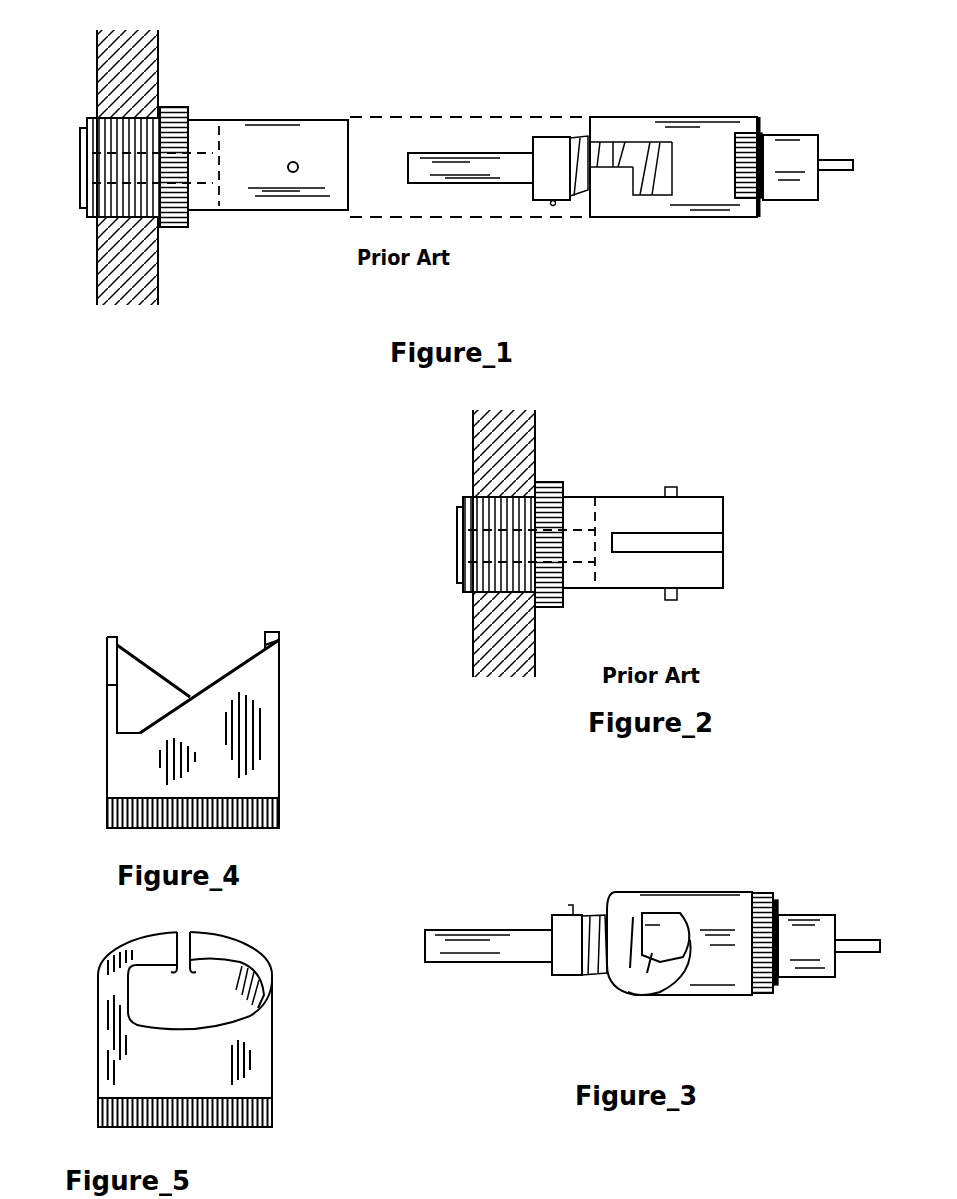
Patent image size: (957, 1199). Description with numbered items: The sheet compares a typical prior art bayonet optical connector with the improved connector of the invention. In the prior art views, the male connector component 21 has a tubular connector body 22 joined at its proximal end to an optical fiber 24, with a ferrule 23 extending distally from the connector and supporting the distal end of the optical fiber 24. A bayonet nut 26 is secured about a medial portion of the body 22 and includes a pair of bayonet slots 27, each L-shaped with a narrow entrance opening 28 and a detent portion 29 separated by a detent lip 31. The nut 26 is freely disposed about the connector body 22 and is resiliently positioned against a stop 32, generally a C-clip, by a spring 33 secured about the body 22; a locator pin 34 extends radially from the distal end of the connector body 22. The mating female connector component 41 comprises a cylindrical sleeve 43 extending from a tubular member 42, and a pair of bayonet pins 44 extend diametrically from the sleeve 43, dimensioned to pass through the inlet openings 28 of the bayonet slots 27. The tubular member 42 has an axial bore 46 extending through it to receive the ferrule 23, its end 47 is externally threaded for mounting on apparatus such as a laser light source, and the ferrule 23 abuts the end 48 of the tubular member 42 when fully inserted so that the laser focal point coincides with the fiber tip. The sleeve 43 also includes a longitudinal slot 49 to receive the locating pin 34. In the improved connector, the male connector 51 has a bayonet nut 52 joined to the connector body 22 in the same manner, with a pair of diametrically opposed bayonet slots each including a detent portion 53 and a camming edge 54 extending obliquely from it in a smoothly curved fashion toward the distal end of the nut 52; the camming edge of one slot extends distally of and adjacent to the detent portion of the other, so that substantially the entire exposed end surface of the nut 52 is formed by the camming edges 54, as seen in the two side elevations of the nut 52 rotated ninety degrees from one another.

In FIG. 1, the male connector component 21 is at (654, 185).
In FIG. 1, the tubular connector body 22 is at (580, 137).
In FIG. 3, the tubular connector body 22 is at (818, 913).
In FIG. 1, the ferrule 23 is at (445, 153).
In FIG. 3, the ferrule 23 is at (443, 930).
In FIG. 1, the optical fiber 24 is at (838, 167).
In FIG. 3, the optical fiber 24 is at (862, 953).
In FIG. 1, the bayonet nut 26 is at (677, 217).
In FIG. 1, the bayonet slot 27 is at (632, 196).
In FIG. 1, the entrance opening 28 is at (610, 157).
In FIG. 1, the detent portion 29 is at (653, 195).
In FIG. 1, the detent lip 31 is at (635, 166).
In FIG. 1, the stop 32 is at (763, 210).
In FIG. 1, the spring 33 is at (622, 145).
In FIG. 1, the locator pin 34 is at (551, 205).
In FIG. 1, the female connector component 41 is at (191, 221).
In FIG. 1, the tubular member 42 is at (200, 117).
In FIG. 1, the cylindrical sleeve 43 is at (267, 120).
In FIG. 2, the cylindrical sleeve 43 is at (715, 505).
In FIG. 1, the bayonet pin 44 is at (298, 162).
In FIG. 2, the bayonet pin 44 is at (677, 487).
In FIG. 1, the axial bore 46 is at (208, 187).
In FIG. 2, the axial bore 46 is at (583, 567).
In FIG. 1, the end 47 is at (98, 210).
In FIG. 2, the end of the tubular member 48 is at (602, 513).
In FIG. 2, the slot 49 is at (710, 543).
In FIG. 3, the male connector 51 is at (642, 923).
In FIG. 4, the bayonet nut 52 is at (279, 715).
In FIG. 5, the bayonet nut 52 is at (272, 1013).
In FIG. 3, the bayonet nut 52 is at (730, 893).
In FIG. 5, the detent portion 53 is at (228, 967).
In FIG. 3, the detent portion 53 is at (677, 925).
In FIG. 4, the camming edge 54 is at (237, 665).
In FIG. 5, the camming edge 54 is at (175, 970).
In FIG. 3, the camming edge 54 is at (610, 898).